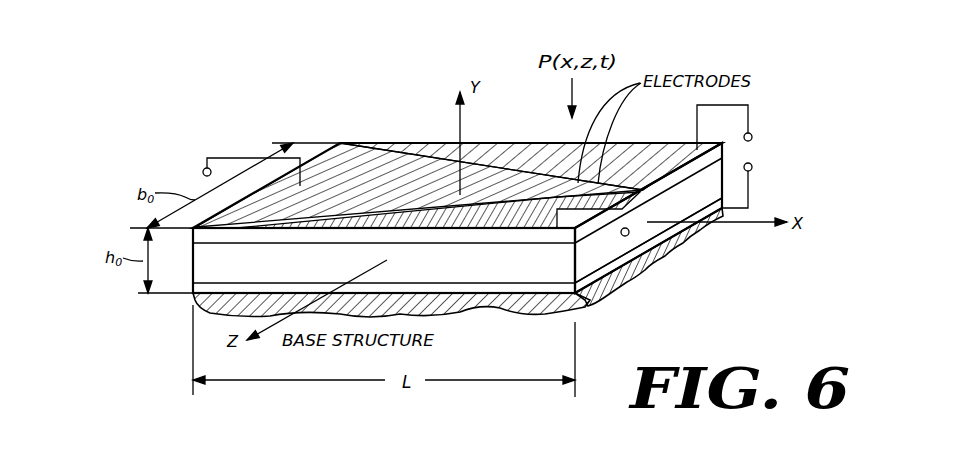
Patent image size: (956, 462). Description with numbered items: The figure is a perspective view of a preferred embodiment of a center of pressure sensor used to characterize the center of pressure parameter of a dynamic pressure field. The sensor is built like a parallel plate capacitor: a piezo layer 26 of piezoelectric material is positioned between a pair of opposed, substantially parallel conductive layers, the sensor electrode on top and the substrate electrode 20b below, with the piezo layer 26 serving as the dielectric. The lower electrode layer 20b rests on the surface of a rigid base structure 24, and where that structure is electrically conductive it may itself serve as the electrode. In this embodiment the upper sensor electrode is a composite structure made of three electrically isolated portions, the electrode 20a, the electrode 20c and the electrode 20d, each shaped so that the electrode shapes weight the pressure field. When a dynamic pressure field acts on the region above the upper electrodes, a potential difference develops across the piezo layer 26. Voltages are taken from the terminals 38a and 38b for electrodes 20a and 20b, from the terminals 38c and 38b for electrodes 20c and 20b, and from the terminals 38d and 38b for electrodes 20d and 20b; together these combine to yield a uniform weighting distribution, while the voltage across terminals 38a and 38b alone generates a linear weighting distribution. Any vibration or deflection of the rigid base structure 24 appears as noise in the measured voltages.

The sensor electrode 20a is at (380, 165).
The substrate electrode 20b is at (672, 256).
The sensor electrode portion 20c is at (628, 150).
The sensor electrode portion 20d is at (511, 210).
The rigid base structure 24 is at (488, 305).
The piezo layer 26 is at (594, 300).
The terminal 38a is at (203, 170).
The terminal 38b is at (752, 168).
The terminal 38c is at (752, 136).
The terminal 38d is at (629, 235).